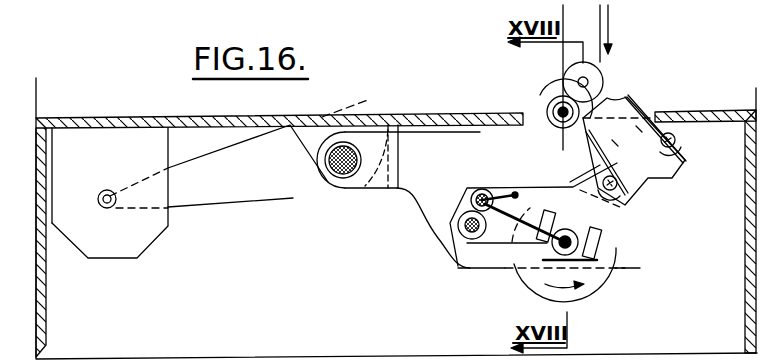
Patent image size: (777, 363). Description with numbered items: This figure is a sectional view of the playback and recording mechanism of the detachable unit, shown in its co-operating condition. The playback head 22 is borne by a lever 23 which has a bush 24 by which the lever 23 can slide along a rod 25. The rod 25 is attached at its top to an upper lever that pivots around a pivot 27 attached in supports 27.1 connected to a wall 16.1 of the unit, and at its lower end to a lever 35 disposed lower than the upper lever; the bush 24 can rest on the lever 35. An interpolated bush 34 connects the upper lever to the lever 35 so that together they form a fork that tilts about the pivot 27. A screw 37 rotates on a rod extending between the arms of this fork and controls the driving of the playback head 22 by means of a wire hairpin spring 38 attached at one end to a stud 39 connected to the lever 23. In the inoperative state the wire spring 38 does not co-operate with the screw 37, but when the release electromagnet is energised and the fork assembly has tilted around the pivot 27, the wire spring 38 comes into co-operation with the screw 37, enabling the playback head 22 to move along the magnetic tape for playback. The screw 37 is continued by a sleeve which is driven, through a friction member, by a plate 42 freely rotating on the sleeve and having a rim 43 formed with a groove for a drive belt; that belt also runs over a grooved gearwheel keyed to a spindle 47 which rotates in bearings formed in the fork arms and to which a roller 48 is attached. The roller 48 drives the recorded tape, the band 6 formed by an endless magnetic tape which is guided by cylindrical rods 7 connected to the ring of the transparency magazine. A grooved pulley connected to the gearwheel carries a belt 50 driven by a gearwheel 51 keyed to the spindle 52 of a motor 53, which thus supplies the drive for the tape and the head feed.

The wall 16.1 is at (138, 83).
The supports 27.1 is at (300, 141).
The interpolated bush 34 is at (328, 182).
The pivot 27 is at (354, 170).
The lever 35 is at (418, 136).
The bush 24 is at (465, 233).
The rod 25 is at (458, 226).
The lever 23 is at (648, 170).
The playback head 22 is at (609, 104).
The spindle 47 is at (548, 122).
The roller 48 is at (557, 100).
The cylindrical rods 7 is at (603, 75).
The band 6 is at (612, 26).
The stud 39 is at (484, 194).
The wire hairpin spring 38 is at (543, 210).
The screw 37 is at (532, 256).
The plate 42 is at (608, 263).
The rim 43 is at (600, 278).
The belt 50 is at (191, 208).
The gearwheel 51 is at (118, 200).
The spindle 52 is at (107, 208).
The motor 53 is at (87, 250).